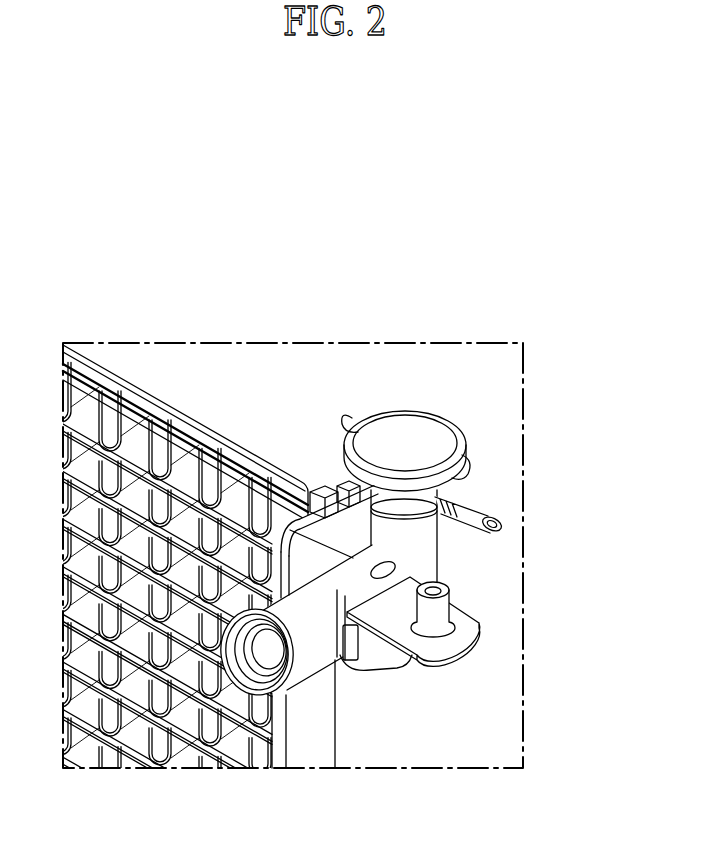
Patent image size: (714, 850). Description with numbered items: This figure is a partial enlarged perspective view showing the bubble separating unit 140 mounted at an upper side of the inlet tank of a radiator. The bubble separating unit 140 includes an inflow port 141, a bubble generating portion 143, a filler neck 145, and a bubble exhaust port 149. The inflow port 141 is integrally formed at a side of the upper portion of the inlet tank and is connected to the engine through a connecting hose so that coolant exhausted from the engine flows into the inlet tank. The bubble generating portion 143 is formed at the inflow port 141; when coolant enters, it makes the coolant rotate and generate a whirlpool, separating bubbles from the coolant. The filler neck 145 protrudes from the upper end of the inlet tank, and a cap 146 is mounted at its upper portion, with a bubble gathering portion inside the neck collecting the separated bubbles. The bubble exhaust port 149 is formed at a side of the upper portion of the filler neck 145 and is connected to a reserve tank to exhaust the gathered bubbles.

The bubble separating unit 140 is at (410, 625).
The inflow port 141 is at (308, 647).
The bubble generating portion 143 is at (252, 660).
The filler neck 145 is at (413, 545).
The cap 146 is at (452, 470).
The bubble exhaust port 149 is at (480, 510).